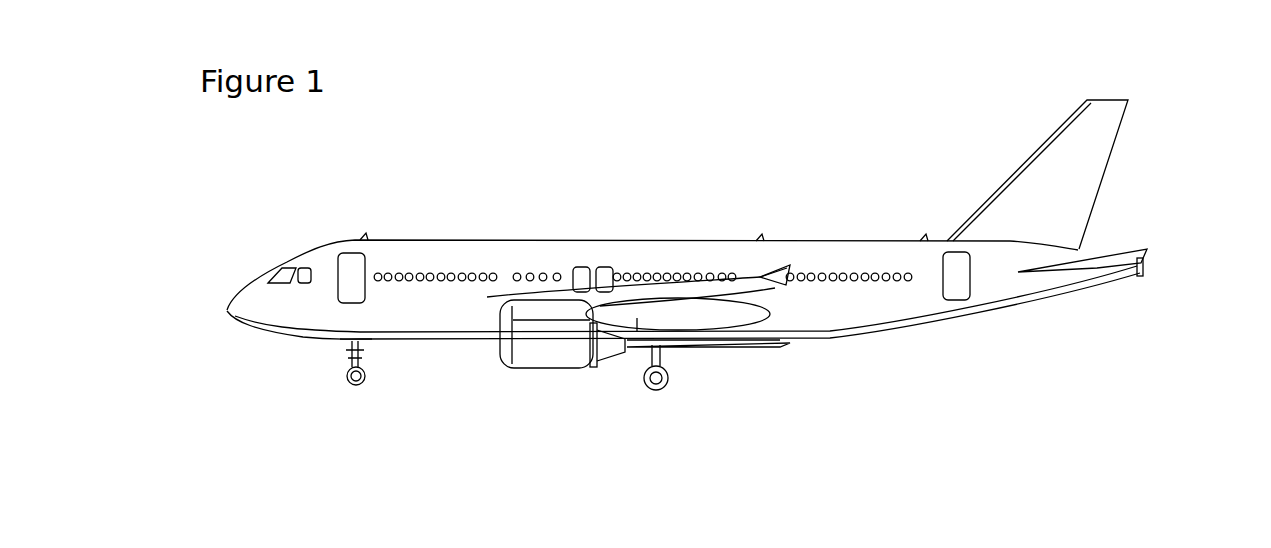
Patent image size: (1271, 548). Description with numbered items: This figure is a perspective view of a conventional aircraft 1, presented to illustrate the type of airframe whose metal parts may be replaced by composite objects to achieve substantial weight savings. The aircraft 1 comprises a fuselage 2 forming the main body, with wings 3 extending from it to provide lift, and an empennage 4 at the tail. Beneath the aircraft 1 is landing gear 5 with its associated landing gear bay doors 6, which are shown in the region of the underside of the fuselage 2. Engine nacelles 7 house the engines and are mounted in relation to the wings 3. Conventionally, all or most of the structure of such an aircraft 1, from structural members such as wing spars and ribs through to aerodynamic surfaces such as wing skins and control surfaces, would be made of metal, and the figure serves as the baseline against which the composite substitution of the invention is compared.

The aircraft 1 is at (221, 216).
The fuselage 2 is at (465, 241).
The wings 3 is at (690, 330).
The empennage 4 is at (1077, 250).
The landing gear 5 is at (345, 379).
The landing gear bay doors 6 is at (365, 340).
The engine nacelles 7 is at (560, 347).